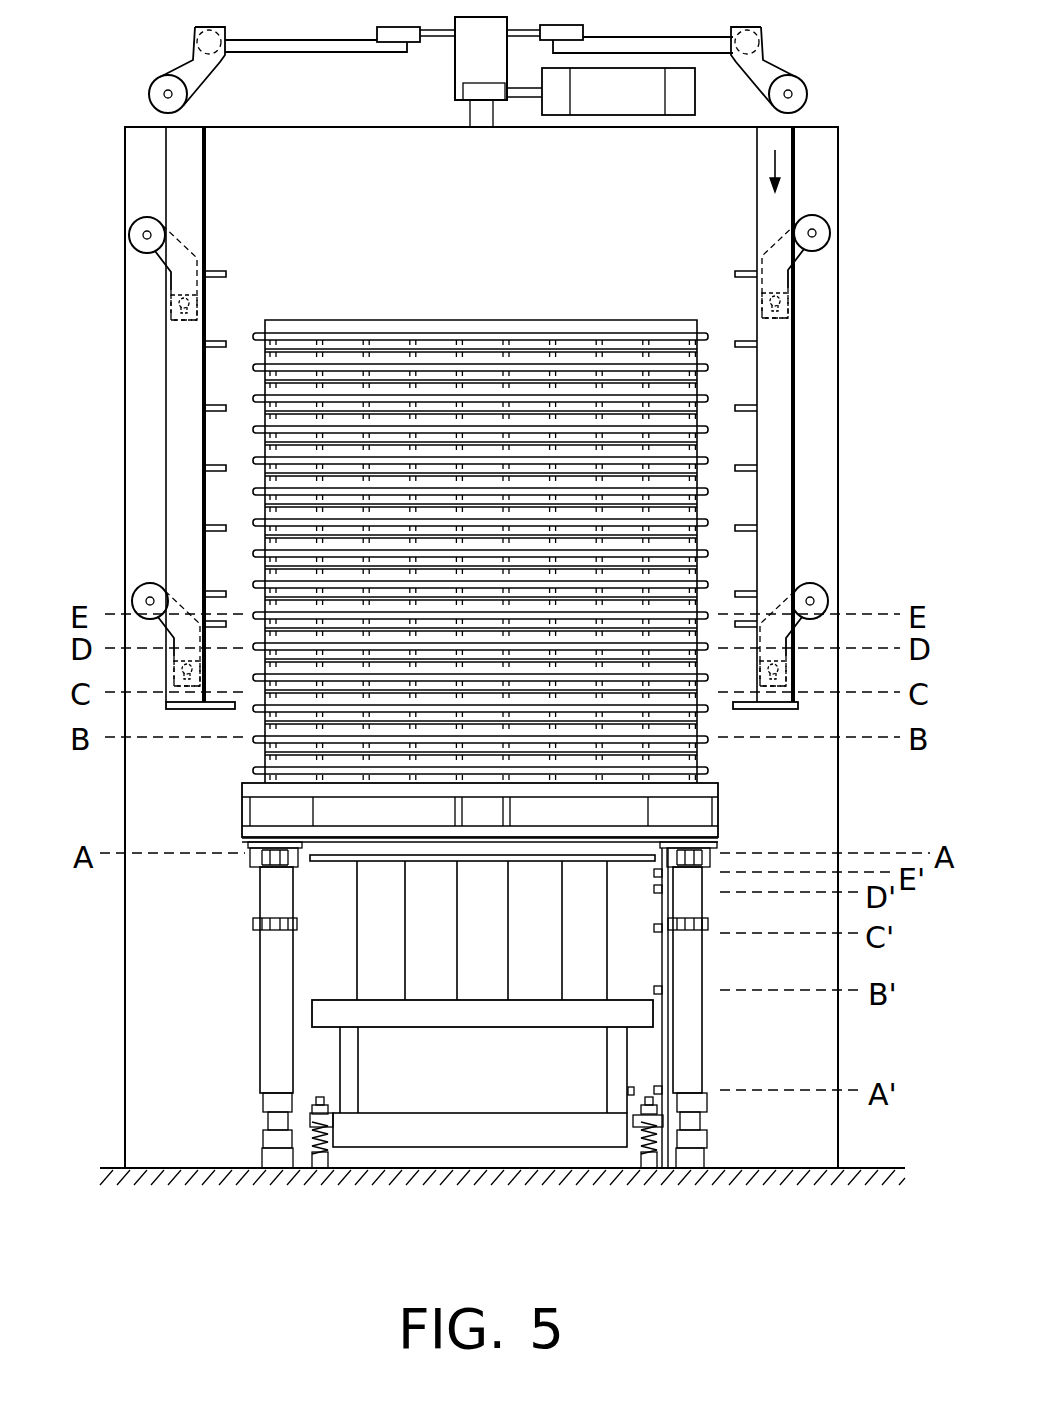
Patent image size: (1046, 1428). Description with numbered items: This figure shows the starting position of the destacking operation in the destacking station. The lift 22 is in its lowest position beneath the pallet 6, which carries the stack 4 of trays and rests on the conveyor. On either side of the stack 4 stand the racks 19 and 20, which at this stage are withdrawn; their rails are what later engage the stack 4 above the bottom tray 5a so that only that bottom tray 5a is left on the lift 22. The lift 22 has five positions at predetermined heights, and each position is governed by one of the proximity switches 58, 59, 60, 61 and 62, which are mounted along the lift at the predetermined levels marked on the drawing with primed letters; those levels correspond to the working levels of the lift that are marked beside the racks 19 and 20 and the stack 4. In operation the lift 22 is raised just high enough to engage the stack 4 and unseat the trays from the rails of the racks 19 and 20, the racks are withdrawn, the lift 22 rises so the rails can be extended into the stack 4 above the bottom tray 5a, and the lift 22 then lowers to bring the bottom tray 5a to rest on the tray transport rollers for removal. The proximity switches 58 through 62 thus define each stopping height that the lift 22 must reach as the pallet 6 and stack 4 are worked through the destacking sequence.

The stack 4 is at (487, 510).
The bottom tray 5a is at (698, 353).
The pallet 6 is at (245, 815).
The rack 19 is at (775, 165).
The rack 20 is at (177, 178).
The lift 22 is at (325, 1020).
The proximity switch 58 is at (656, 1088).
The proximity switch 59 is at (656, 986).
The proximity switch 60 is at (654, 929).
The proximity switch 61 is at (654, 892).
The proximity switch 62 is at (654, 874).